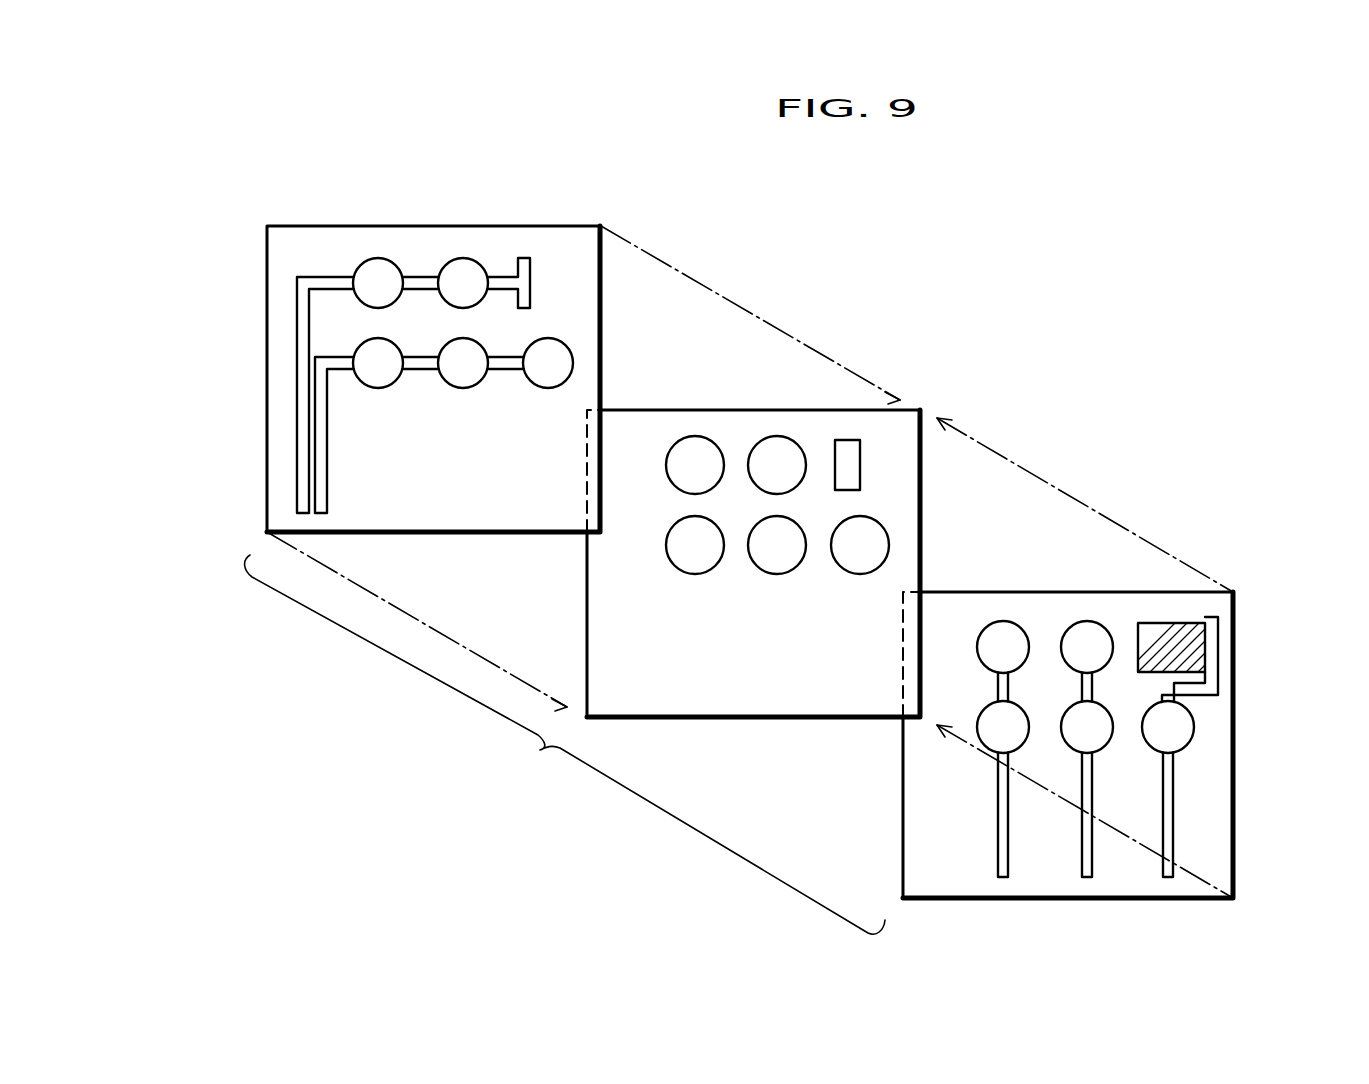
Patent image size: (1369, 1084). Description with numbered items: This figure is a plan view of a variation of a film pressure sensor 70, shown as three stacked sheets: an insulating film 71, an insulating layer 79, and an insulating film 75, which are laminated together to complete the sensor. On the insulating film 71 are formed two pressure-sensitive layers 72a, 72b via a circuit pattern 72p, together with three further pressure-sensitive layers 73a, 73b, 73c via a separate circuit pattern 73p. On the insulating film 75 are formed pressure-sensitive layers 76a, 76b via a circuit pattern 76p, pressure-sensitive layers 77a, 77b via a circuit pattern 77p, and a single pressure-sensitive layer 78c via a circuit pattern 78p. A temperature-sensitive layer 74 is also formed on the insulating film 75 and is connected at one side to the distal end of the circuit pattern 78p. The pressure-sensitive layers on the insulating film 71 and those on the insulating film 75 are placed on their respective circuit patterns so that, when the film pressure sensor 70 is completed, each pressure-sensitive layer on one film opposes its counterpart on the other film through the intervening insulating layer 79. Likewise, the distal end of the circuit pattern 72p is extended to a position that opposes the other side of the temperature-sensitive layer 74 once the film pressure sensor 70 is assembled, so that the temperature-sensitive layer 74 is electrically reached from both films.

The film pressure sensor 70 is at (565, 744).
The insulating film 71 is at (281, 260).
The pressure-sensitive layer 72a is at (381, 270).
The pressure-sensitive layer 72b is at (464, 275).
The circuit pattern 72p is at (305, 333).
The pressure-sensitive layer 73a is at (368, 350).
The pressure-sensitive layer 73b is at (450, 350).
The pressure-sensitive layer 73c is at (548, 345).
The circuit pattern 73p is at (322, 413).
The temperature-sensitive layer 74 is at (1183, 648).
The insulating film 75 is at (1215, 818).
The pressure-sensitive layer 76a is at (1003, 636).
The pressure-sensitive layer 76b is at (985, 715).
The circuit pattern 76p is at (1003, 868).
The pressure-sensitive layer 77a is at (1088, 636).
The pressure-sensitive layer 77b is at (1075, 720).
The circuit pattern 77p is at (1088, 868).
The pressure-sensitive layer 78c is at (1180, 728).
The circuit pattern 78p is at (1168, 868).
The insulating layer 79 is at (605, 587).